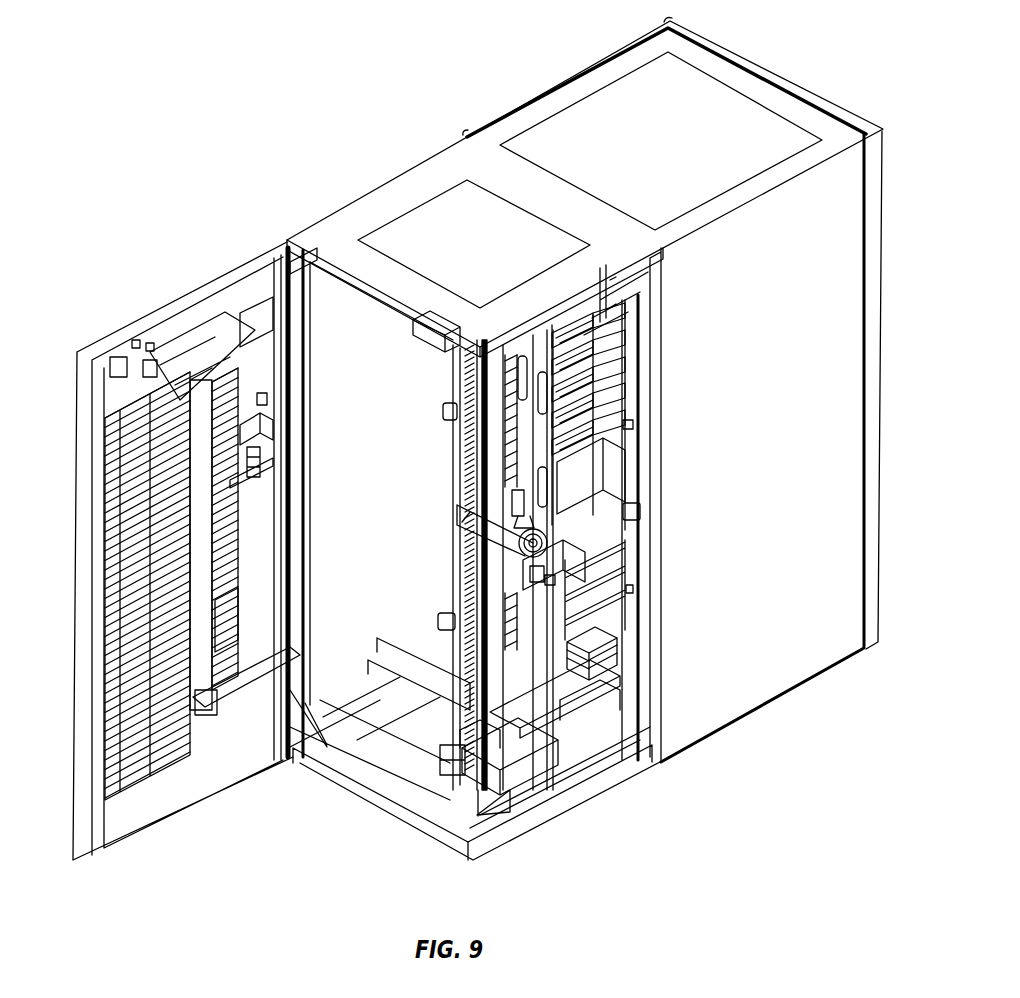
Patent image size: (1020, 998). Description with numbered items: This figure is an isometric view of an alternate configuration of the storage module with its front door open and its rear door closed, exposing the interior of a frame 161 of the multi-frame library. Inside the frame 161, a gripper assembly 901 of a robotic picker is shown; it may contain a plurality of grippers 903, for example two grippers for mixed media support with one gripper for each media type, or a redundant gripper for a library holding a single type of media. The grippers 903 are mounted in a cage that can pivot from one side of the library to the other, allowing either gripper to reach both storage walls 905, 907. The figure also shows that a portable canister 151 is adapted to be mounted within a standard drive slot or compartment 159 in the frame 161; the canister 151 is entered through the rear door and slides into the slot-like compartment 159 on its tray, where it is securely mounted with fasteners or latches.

The frame 161 is at (783, 52).
The storage wall 907 is at (97, 718).
The storage wall 905 is at (463, 456).
The gripper assembly 901 is at (596, 531).
The grippers 903 is at (590, 557).
The compartment 159 is at (612, 617).
The canister 151 is at (615, 652).